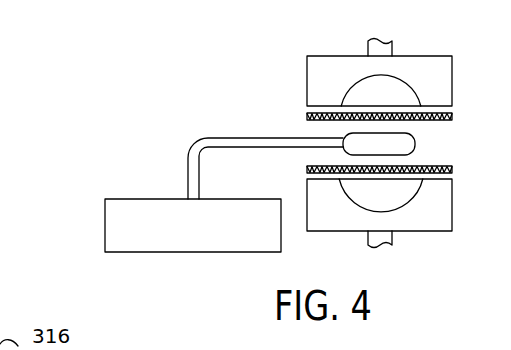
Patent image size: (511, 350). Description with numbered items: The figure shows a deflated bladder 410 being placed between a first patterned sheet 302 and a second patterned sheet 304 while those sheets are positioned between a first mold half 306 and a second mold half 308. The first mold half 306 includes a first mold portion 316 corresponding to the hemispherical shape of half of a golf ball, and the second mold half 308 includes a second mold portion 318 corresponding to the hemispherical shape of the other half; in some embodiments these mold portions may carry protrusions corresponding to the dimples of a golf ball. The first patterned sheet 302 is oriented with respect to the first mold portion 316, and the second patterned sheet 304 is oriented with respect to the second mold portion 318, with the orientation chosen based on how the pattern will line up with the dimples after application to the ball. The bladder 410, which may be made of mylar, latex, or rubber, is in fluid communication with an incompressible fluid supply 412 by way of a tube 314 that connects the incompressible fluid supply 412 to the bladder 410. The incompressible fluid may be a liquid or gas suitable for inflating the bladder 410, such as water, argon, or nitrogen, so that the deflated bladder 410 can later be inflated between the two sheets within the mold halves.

The first patterned sheet 302 is at (444, 120).
The second patterned sheet 304 is at (437, 171).
The first mold half 306 is at (408, 63).
The second mold half 308 is at (403, 222).
The tube 314 is at (231, 142).
The first mold portion 316 is at (344, 98).
The second mold portion 318 is at (353, 204).
The bladder 410 is at (412, 148).
The incompressible fluid supply 412 is at (113, 235).